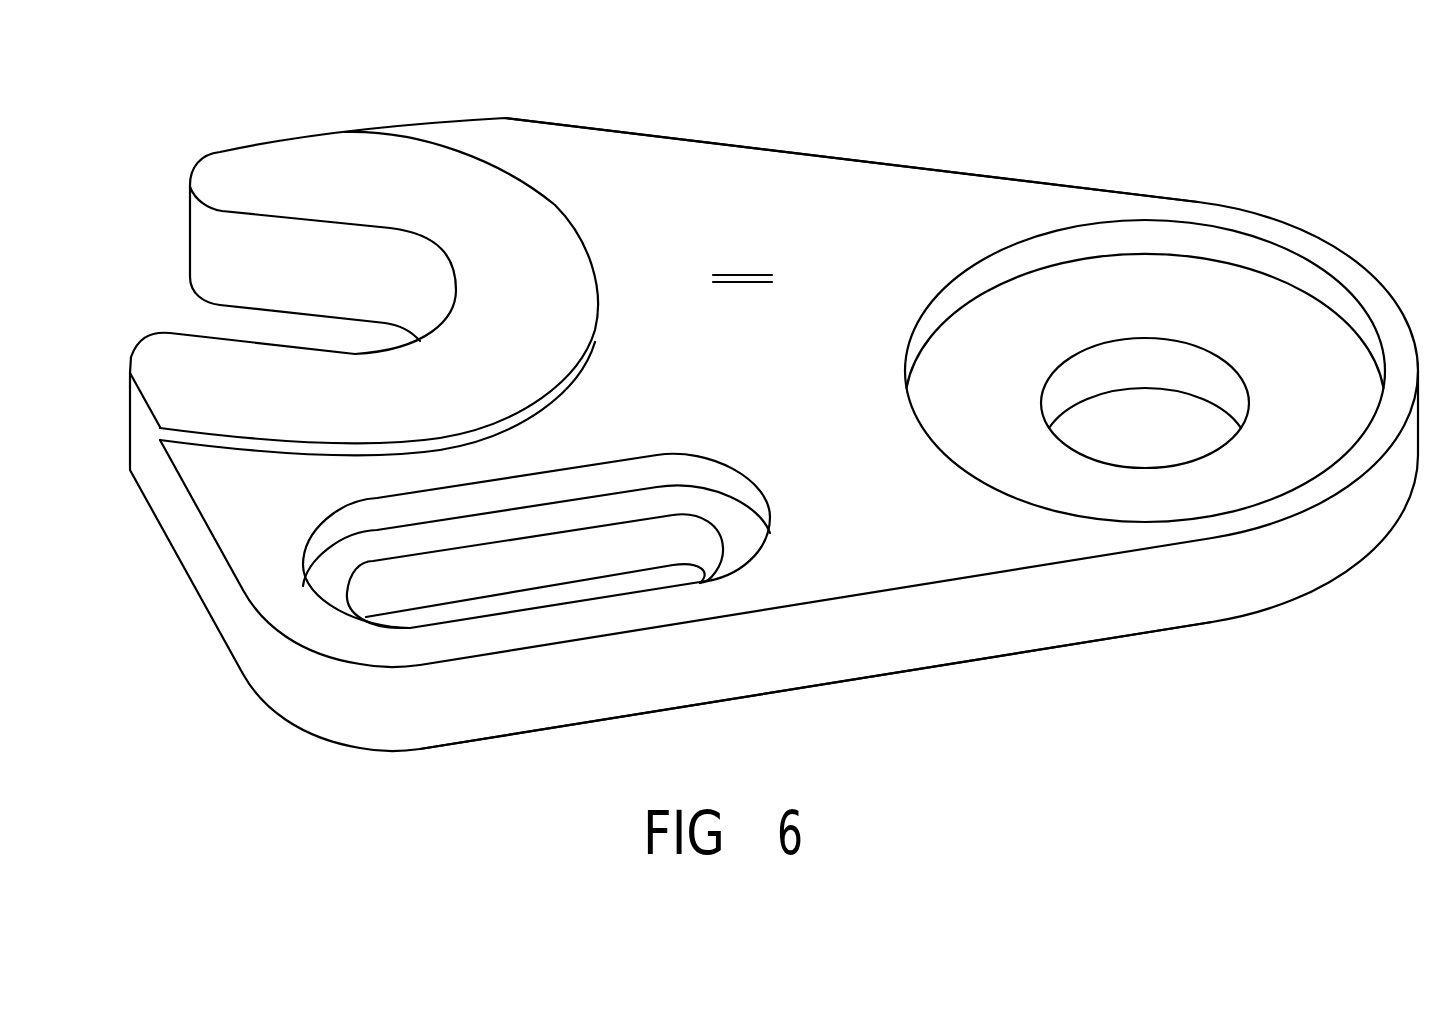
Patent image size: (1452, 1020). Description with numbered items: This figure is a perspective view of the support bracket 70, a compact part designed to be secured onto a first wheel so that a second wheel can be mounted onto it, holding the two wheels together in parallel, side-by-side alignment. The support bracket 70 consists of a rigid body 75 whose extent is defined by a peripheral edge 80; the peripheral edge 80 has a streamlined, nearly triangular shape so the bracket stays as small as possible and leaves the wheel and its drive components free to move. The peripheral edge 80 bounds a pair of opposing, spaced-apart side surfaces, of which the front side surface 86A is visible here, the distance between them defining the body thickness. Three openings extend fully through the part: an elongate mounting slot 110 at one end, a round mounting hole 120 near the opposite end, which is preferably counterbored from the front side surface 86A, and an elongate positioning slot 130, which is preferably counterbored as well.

The support bracket 70 is at (958, 116).
The rigid body 75 is at (818, 190).
The peripheral edge 80 is at (935, 647).
The elongate mounting slot 110 is at (274, 216).
The round mounting hole 120 is at (1143, 340).
The elongate positioning slot 130 is at (605, 463).
The front side surface 86A is at (742, 261).